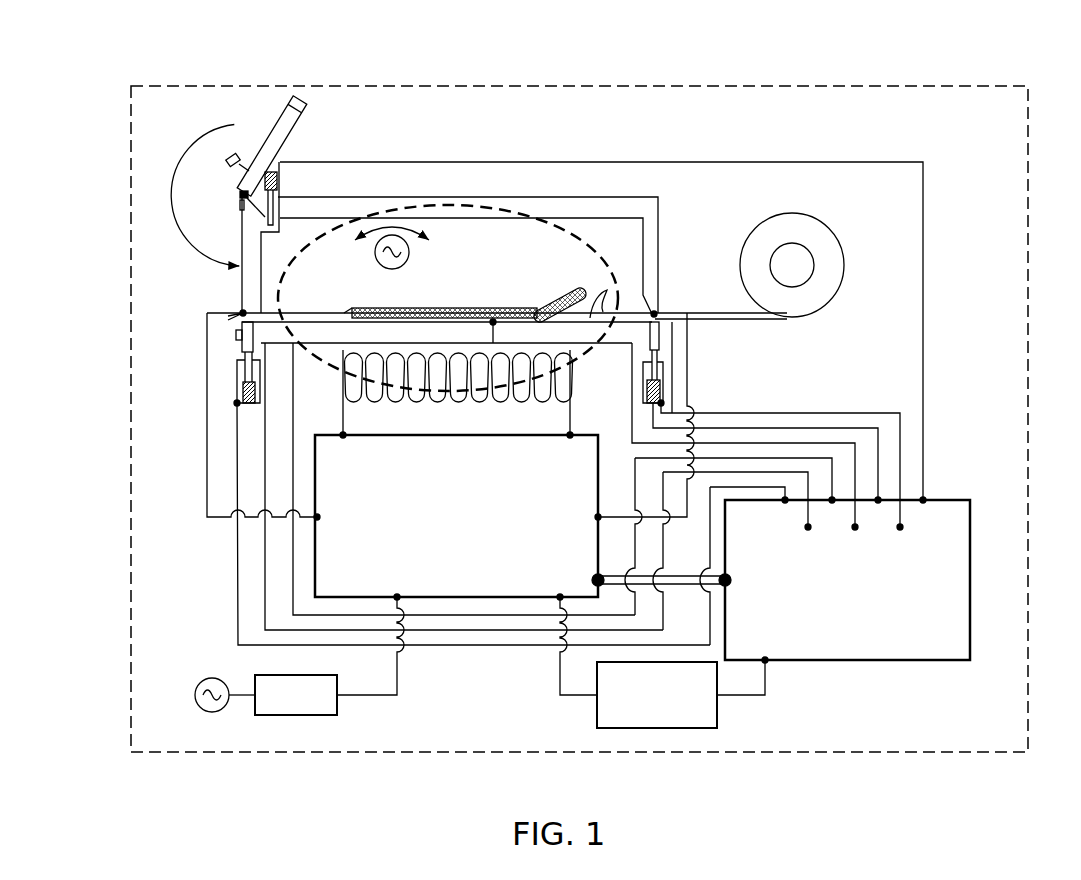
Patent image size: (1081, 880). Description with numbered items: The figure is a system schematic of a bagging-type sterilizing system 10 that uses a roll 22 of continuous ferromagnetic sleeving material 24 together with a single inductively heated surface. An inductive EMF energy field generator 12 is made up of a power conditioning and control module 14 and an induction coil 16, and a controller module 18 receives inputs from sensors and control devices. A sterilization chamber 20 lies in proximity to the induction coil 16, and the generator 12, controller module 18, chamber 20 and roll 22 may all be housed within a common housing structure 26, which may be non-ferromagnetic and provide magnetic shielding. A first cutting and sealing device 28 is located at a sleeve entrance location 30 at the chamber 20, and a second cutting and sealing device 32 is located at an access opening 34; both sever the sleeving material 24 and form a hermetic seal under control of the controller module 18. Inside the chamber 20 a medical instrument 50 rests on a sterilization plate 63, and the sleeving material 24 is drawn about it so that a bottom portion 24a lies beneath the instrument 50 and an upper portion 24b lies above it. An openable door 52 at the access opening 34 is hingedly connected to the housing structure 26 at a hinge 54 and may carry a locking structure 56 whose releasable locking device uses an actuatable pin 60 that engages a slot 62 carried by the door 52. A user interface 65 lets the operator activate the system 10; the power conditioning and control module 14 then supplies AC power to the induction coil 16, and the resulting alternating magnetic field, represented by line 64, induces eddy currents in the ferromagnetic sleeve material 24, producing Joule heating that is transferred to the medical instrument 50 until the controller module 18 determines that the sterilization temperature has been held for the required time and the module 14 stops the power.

The sterilizing system 10 is at (704, 61).
The inductive EMF energy field generator 12 is at (210, 548).
The power conditioning and control module 14 is at (518, 598).
The induction coil 16 is at (340, 424).
The controller module 18 is at (985, 517).
The sterilization chamber 20 is at (613, 212).
The roll 22 is at (857, 258).
The sleeving material 24 is at (728, 321).
The bottom portion 24a is at (590, 316).
The upper portion 24b is at (572, 292).
The housing structure 26 is at (930, 86).
The first cutting and sealing device 28 is at (621, 370).
The sleeve entrance location 30 is at (660, 308).
The second cutting and sealing device 32 is at (228, 338).
The access opening 34 is at (242, 311).
The medical instrument 50 is at (540, 314).
The openable door 52 is at (271, 131).
The hinge 54 is at (240, 194).
The locking structure 56 is at (289, 178).
The actuatable pin 60 is at (277, 205).
The engageable slot 62 is at (228, 155).
The sterilization plate 63 is at (330, 333).
The alternating magnetic field 64 is at (455, 205).
The user interface 65 is at (718, 717).